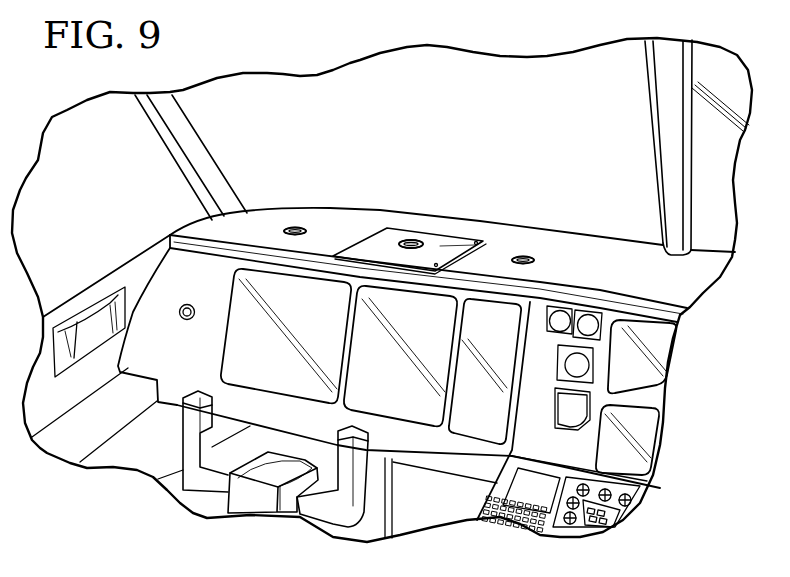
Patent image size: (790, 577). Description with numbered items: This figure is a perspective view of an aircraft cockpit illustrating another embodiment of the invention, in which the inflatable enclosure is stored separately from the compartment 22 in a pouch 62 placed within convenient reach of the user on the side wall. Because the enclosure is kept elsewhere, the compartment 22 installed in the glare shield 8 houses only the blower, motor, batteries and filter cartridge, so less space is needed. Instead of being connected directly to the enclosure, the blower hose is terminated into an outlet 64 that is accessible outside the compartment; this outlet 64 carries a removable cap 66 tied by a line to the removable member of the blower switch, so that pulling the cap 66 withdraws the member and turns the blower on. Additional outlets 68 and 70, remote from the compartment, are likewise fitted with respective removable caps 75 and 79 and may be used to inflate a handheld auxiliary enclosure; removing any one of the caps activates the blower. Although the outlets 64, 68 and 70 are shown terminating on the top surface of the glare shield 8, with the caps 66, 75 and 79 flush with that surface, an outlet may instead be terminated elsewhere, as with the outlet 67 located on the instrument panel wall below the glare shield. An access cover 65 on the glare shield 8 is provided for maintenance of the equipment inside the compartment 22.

The glare shield 8 is at (577, 240).
The compartment 22 is at (410, 238).
The pouch 62 is at (48, 347).
The outlet 64 is at (418, 238).
The access cover 65 is at (370, 243).
The removable cap 66 is at (438, 249).
The outlet 67 is at (183, 321).
The additional outlet 68 is at (285, 224).
The additional outlet 70 is at (531, 251).
The removable cap 75 is at (301, 227).
The removable cap 79 is at (535, 261).